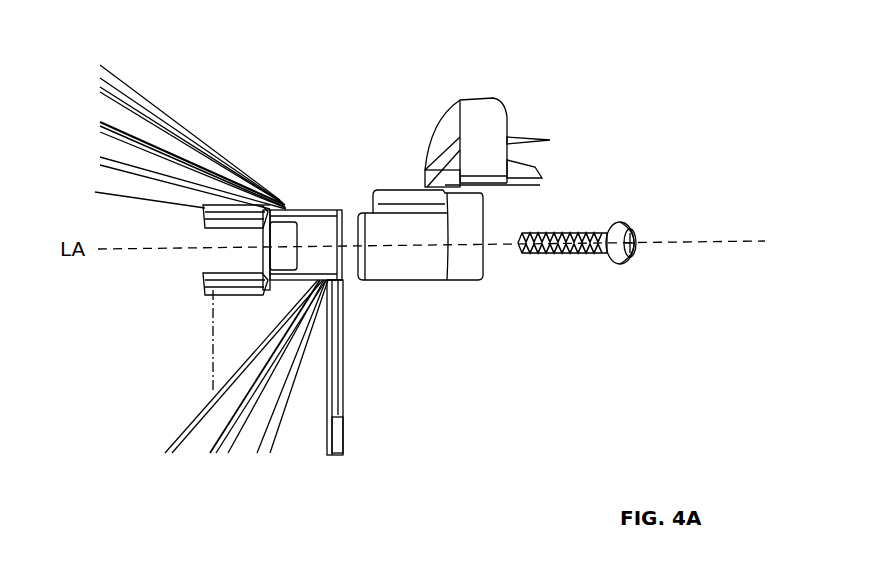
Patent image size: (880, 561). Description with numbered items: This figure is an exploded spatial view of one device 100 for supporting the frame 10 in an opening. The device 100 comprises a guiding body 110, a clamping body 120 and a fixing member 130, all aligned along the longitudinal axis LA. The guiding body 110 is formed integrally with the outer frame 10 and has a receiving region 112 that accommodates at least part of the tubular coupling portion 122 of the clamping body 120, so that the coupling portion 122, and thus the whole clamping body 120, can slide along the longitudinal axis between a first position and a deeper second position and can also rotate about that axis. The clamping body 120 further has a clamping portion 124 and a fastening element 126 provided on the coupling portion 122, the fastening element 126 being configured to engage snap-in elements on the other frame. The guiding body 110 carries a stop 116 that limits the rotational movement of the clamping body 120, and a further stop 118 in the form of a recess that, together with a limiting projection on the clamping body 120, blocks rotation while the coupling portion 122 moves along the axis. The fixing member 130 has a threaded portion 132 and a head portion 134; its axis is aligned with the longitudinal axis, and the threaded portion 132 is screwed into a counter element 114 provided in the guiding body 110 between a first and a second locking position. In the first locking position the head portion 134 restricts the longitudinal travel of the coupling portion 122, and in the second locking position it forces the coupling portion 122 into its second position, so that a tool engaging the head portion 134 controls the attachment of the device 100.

The frame 10 is at (132, 297).
The device 100 is at (498, 340).
The guiding body 110 is at (310, 236).
The receiving region 112 is at (337, 280).
The counter element 114 is at (272, 330).
The stop 116 is at (297, 208).
The further stop 118 is at (225, 206).
The clamping body 120 is at (515, 117).
The coupling portion 122 is at (388, 267).
The clamping portion 124 is at (452, 127).
The fastening element 126 is at (500, 193).
The fixing member 130 is at (555, 272).
The threaded portion 132 is at (572, 260).
The head portion 134 is at (632, 227).